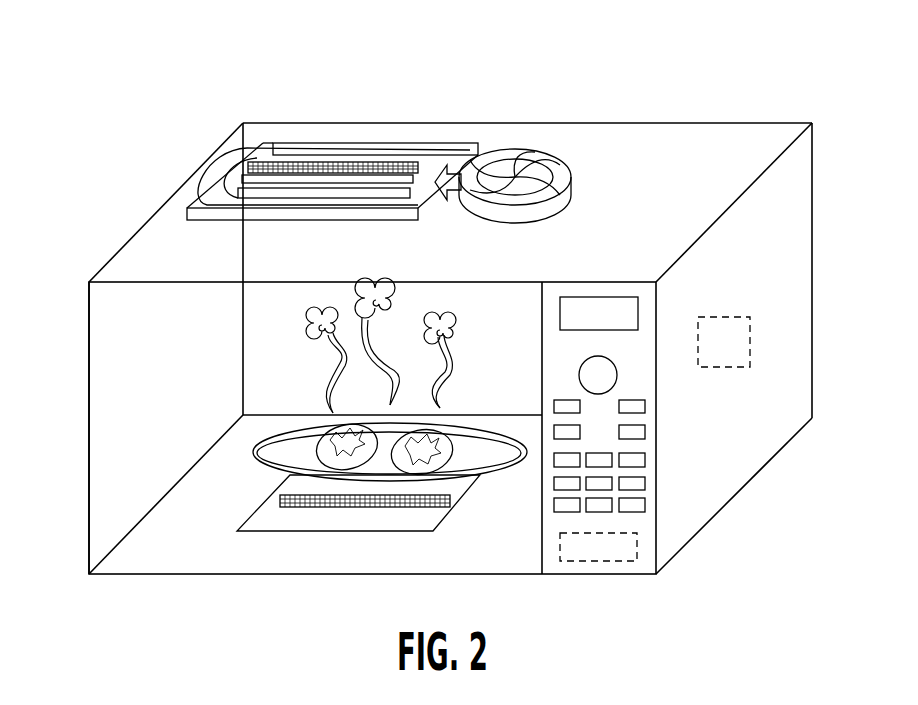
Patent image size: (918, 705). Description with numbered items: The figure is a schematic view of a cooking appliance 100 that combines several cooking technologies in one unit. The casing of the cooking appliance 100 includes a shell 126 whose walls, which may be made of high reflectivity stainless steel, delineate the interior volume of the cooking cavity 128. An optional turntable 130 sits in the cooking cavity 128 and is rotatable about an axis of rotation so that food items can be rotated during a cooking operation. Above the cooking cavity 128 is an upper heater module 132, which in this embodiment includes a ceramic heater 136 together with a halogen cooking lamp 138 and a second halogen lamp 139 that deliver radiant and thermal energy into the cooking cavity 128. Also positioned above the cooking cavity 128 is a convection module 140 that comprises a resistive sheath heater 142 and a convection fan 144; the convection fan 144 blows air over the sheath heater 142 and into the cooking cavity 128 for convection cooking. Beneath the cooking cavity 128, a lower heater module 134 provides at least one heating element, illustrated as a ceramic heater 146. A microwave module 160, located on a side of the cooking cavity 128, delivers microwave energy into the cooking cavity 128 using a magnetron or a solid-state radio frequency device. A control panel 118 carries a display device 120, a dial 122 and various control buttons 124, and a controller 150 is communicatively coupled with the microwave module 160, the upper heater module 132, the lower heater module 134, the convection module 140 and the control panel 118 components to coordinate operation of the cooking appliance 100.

The cooking appliance 100 is at (706, 68).
The control panel 118 is at (630, 577).
The display device 120 is at (598, 297).
The dial 122 is at (618, 373).
The control buttons 124 is at (645, 507).
The shell 126 is at (87, 547).
The cooking cavity 128 is at (208, 536).
The turntable 130 is at (250, 458).
The upper heater module 132 is at (323, 141).
The lower heater module 134 is at (327, 533).
The ceramic heater 136 is at (380, 163).
The halogen cooking lamp 138 is at (277, 195).
The halogen lamp 139 is at (257, 173).
The convection module 140 is at (486, 132).
The sheath heater 142 is at (208, 172).
The convection fan 144 is at (505, 158).
The ceramic heater 146 is at (358, 505).
The controller 150 is at (585, 563).
The microwave module 160 is at (750, 332).